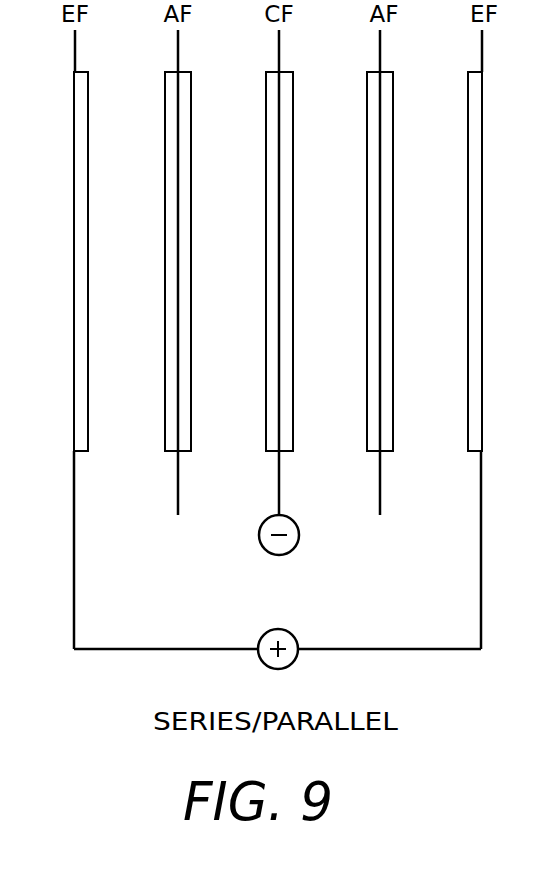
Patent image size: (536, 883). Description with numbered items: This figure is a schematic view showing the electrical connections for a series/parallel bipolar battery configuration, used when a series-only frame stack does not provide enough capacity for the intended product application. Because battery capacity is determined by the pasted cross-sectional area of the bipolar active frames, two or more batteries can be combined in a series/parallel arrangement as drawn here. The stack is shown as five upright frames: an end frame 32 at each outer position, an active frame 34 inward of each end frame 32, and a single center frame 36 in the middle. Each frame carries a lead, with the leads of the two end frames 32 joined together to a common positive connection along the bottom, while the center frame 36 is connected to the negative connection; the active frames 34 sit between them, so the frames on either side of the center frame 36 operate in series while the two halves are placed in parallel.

The end frame 32 is at (66, 66).
The active frame 34 is at (157, 66).
The center frame 36 is at (259, 66).